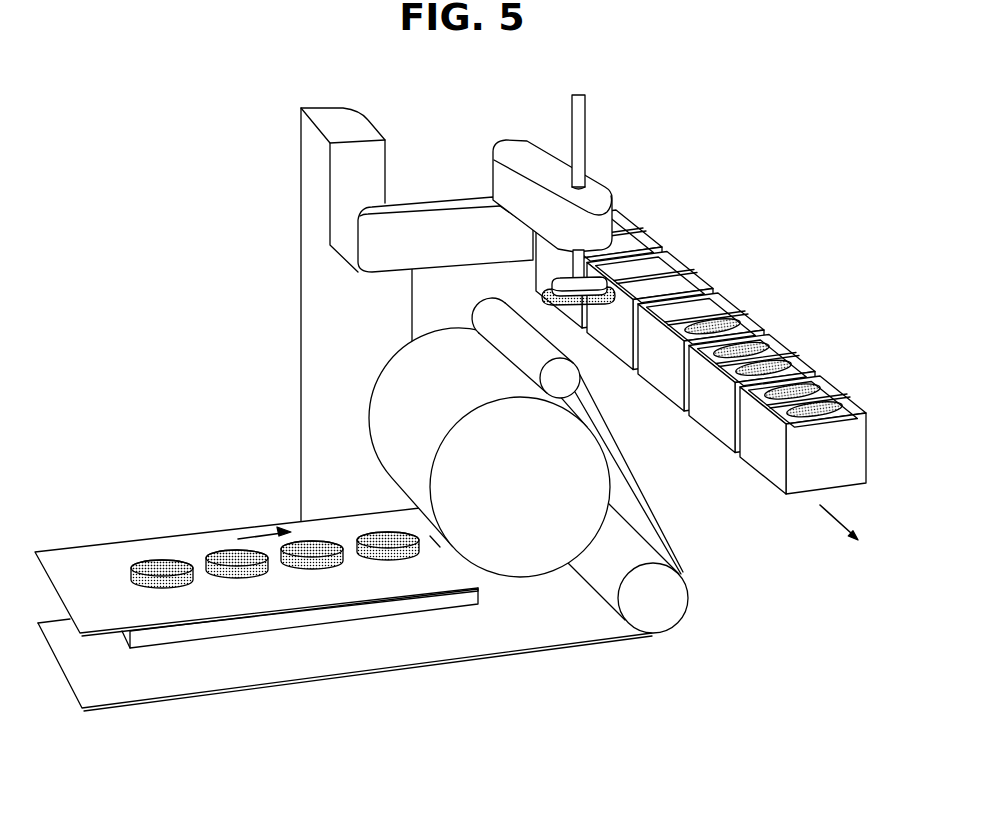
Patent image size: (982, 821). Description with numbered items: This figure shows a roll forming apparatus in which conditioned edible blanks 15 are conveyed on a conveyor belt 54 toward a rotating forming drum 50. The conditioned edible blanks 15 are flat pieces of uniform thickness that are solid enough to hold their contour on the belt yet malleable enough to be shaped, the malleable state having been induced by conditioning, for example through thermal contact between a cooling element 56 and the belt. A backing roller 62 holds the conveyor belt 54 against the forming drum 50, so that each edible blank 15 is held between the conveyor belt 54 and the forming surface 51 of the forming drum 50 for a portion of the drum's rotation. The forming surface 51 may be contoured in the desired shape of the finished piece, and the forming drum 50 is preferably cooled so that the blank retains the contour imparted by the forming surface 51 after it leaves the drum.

The conditioned edible blanks 15 is at (155, 550).
The forming drum 50 is at (432, 452).
The forming surface 51 is at (382, 410).
The conveyor belt 54 is at (468, 660).
The cooling element 56 is at (233, 632).
The backing roller 62 is at (577, 380).